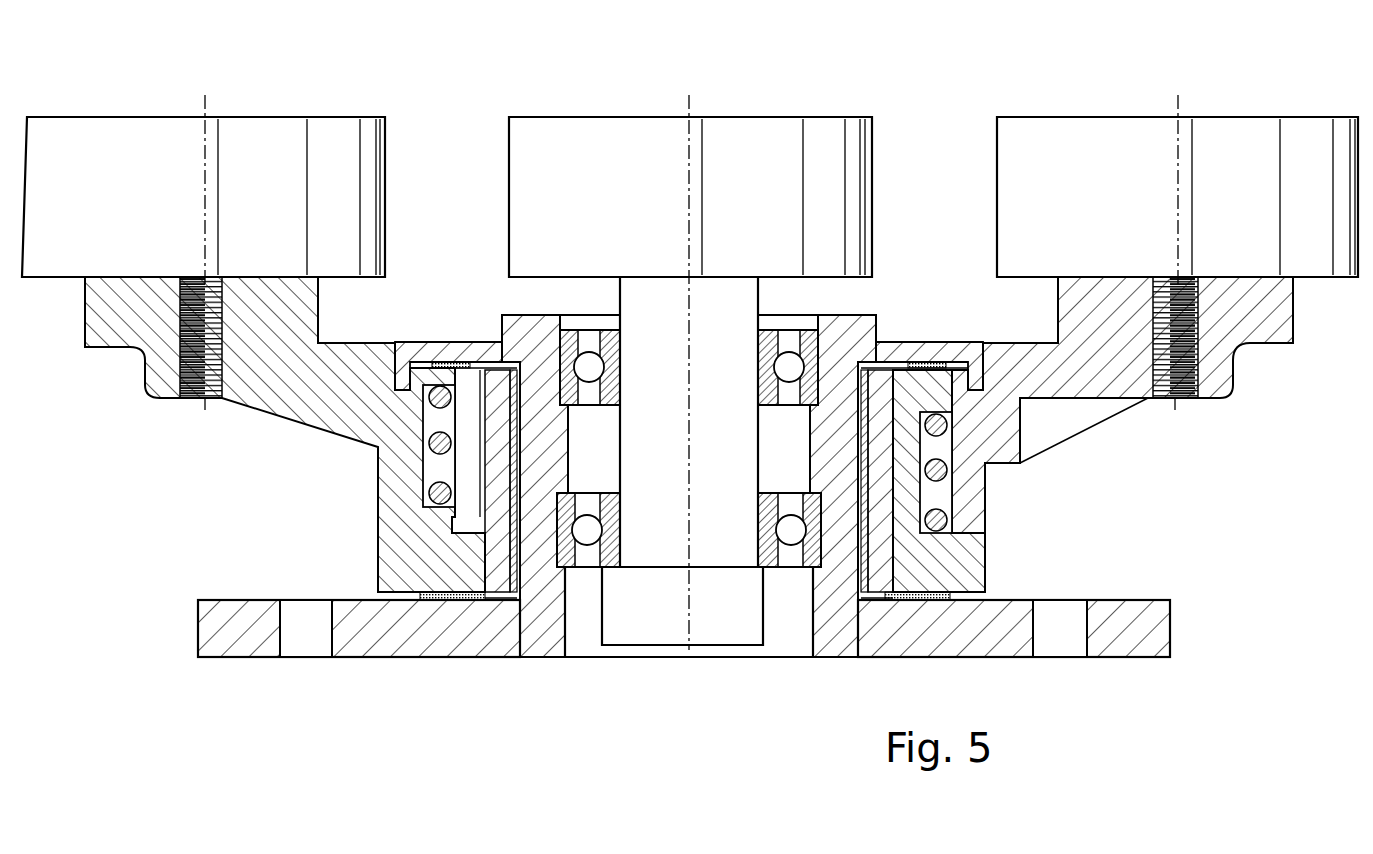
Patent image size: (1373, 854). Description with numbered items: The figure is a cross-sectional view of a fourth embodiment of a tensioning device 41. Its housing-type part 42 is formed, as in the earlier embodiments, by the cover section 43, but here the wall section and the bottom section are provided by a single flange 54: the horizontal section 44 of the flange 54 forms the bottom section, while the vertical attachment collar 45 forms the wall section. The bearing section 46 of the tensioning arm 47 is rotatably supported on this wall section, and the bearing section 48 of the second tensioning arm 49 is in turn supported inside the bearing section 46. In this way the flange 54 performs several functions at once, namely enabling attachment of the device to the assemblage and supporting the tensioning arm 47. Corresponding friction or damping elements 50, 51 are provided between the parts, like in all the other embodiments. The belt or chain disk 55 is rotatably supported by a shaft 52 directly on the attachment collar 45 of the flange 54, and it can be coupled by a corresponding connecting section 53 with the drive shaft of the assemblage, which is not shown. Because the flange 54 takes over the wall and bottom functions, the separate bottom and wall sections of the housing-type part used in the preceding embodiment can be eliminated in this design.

The tensioning device 41 is at (936, 99).
The housing-type part 42 is at (528, 664).
The cover section 43 is at (410, 350).
The horizontal section 44 is at (380, 648).
The vertical attachment collar 45 is at (530, 358).
The bearing section 46 is at (450, 465).
The tensioning arm 47 is at (300, 402).
The bearing section 48 is at (914, 348).
The tensioning arm 49 is at (1098, 385).
The friction or damping element 50 is at (432, 600).
The friction or damping element 51 is at (938, 352).
The shaft 52 is at (732, 290).
The connecting section 53 is at (712, 633).
The flange 54 is at (495, 648).
The belt or chain disk 55 is at (793, 137).